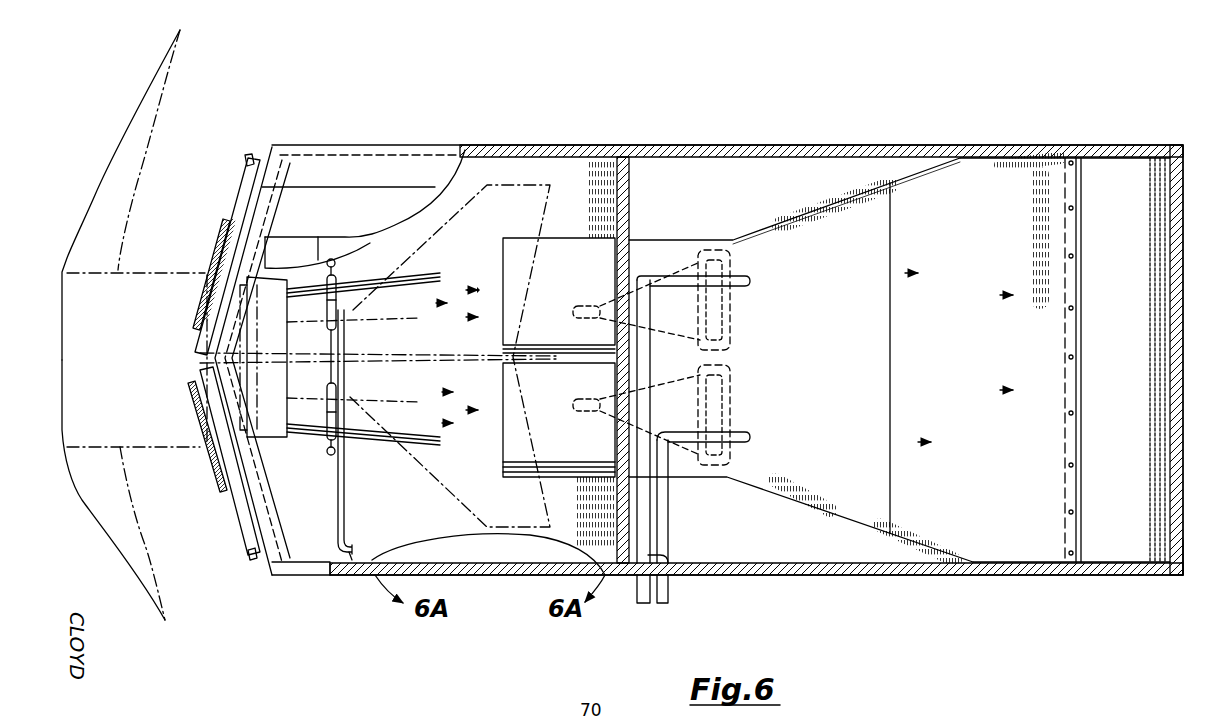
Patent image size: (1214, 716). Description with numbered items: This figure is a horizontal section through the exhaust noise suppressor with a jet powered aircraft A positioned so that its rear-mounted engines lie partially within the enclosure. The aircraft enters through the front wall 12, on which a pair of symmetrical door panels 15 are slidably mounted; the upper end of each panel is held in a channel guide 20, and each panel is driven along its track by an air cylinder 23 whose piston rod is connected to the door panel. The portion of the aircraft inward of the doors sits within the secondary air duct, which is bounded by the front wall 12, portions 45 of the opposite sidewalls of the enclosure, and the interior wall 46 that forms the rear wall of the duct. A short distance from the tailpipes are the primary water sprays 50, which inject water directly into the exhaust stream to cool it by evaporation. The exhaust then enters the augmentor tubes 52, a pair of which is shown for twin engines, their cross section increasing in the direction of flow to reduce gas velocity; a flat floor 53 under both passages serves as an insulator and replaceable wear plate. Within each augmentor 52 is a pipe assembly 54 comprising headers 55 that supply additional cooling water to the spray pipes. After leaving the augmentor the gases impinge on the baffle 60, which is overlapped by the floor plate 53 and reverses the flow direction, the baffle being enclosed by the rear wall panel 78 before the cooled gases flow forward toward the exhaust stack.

The jet powered aircraft A is at (62, 296).
The front wall 12 is at (263, 163).
The door panel 15 is at (246, 158).
The channel guide 20 is at (240, 201).
The air cylinder 23 is at (212, 257).
The sidewall portions 45 is at (516, 145).
The interior wall 46 is at (630, 200).
The primary water spray 50 is at (336, 278).
The augmentor tube 52 is at (578, 240).
The flat floor 53 is at (946, 371).
The pipe assembly 54 is at (735, 320).
The header 55 is at (590, 306).
The baffle 60 is at (1124, 371).
The rear wall panel 78 is at (1186, 552).